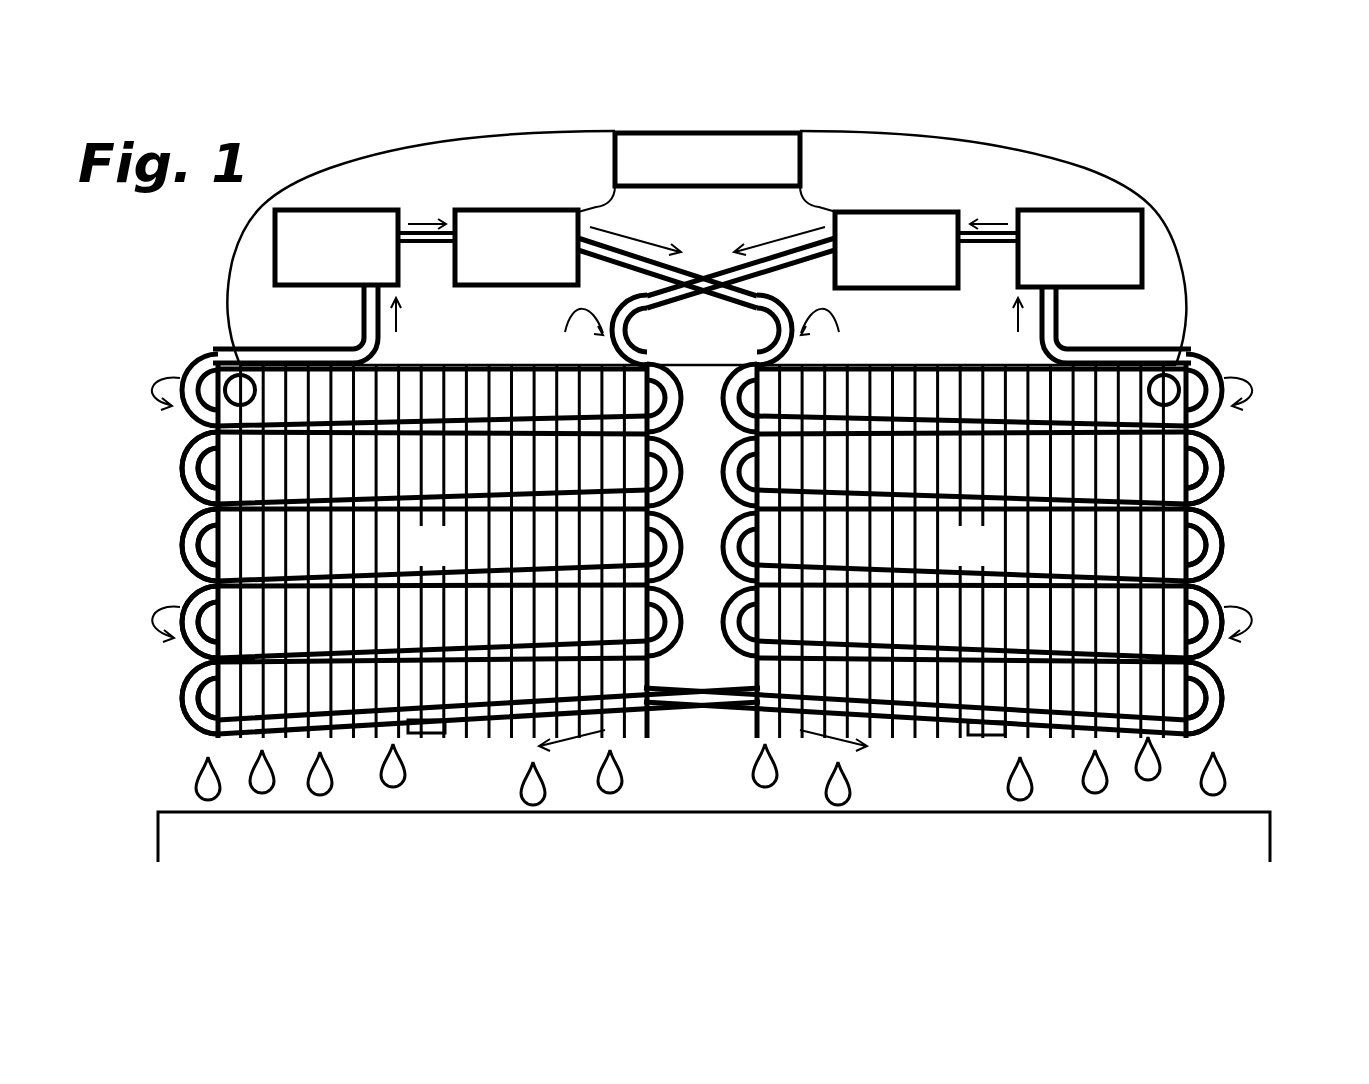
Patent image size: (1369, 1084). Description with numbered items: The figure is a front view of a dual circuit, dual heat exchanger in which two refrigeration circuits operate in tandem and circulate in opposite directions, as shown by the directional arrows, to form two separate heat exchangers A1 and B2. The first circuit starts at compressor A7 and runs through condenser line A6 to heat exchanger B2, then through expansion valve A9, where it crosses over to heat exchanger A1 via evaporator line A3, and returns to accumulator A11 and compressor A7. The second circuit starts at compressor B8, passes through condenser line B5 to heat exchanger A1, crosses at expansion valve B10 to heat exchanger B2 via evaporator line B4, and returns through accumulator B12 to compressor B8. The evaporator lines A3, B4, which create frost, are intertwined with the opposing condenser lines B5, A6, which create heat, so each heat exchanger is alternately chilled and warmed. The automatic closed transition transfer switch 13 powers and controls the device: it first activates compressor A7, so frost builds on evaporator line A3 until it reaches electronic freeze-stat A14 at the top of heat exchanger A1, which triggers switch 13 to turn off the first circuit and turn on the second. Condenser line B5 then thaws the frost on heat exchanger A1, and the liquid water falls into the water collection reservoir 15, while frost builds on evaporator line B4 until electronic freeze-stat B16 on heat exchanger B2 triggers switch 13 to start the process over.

The automatic closed transition transfer switch 13 is at (707, 159).
The water collection reservoir 15 is at (714, 837).
The heat exchanger A1 is at (471, 546).
The heat exchanger B2 is at (933, 546).
The evaporator line A3 is at (358, 327).
The evaporator line B4 is at (1062, 327).
The condenser line B5 is at (800, 268).
The condenser line A6 is at (610, 272).
The compressor A7 is at (606, 259).
The compressor B8 is at (832, 260).
The expansion valve A9 is at (432, 742).
The expansion valve B10 is at (988, 742).
The accumulator A11 is at (365, 247).
The accumulator B12 is at (1080, 248).
The electronic freeze-stat A14 is at (212, 360).
The electronic freeze-stat B16 is at (1196, 362).